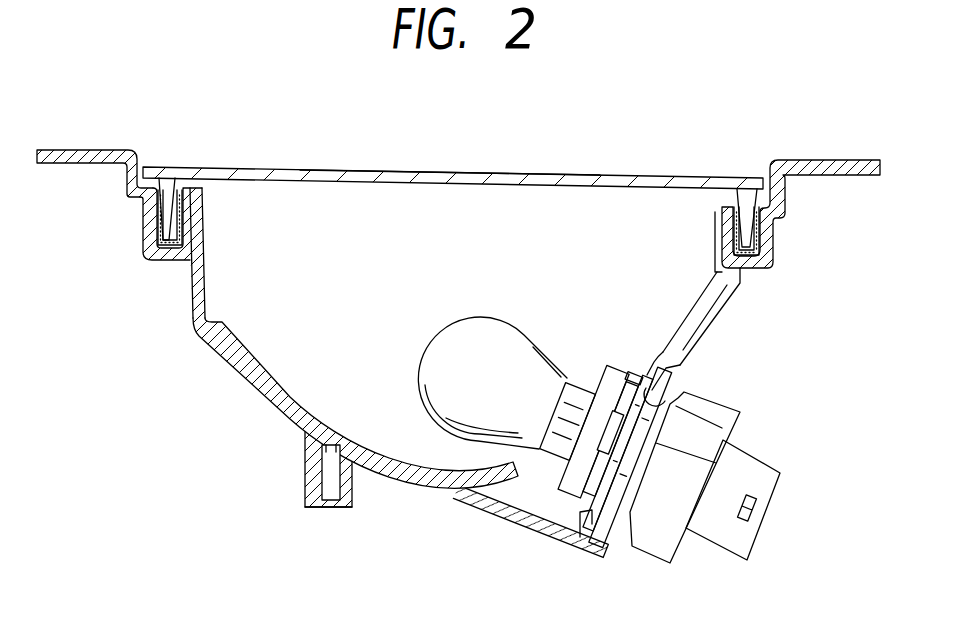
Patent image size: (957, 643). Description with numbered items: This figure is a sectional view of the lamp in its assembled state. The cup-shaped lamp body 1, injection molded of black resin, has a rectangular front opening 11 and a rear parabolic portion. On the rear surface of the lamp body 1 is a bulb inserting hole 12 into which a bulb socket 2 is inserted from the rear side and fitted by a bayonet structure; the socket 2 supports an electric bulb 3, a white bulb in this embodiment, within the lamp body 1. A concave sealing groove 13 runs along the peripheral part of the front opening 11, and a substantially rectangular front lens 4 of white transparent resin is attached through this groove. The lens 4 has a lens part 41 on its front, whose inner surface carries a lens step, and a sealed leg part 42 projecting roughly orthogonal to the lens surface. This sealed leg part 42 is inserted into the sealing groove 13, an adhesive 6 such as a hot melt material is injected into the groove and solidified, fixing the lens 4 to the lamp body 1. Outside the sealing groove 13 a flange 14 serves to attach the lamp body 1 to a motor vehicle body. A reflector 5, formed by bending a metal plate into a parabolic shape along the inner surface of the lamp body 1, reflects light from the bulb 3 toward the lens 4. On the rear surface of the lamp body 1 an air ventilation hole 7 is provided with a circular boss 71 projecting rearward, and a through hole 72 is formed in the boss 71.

The lamp body 1 is at (240, 383).
The bulb socket 2 is at (643, 533).
The electric bulb 3 is at (440, 356).
The front lens 4 is at (313, 168).
The reflector 5 is at (262, 372).
The adhesive 6 is at (163, 259).
The air ventilation hole 7 is at (307, 483).
The front opening 11 is at (627, 203).
The bulb inserting hole 12 is at (675, 392).
The sealing groove 13 is at (176, 196).
The flange 14 is at (92, 152).
The lens part 41 is at (468, 170).
The sealed leg part 42 is at (166, 216).
The boss 71 is at (352, 484).
The through hole 72 is at (333, 500).